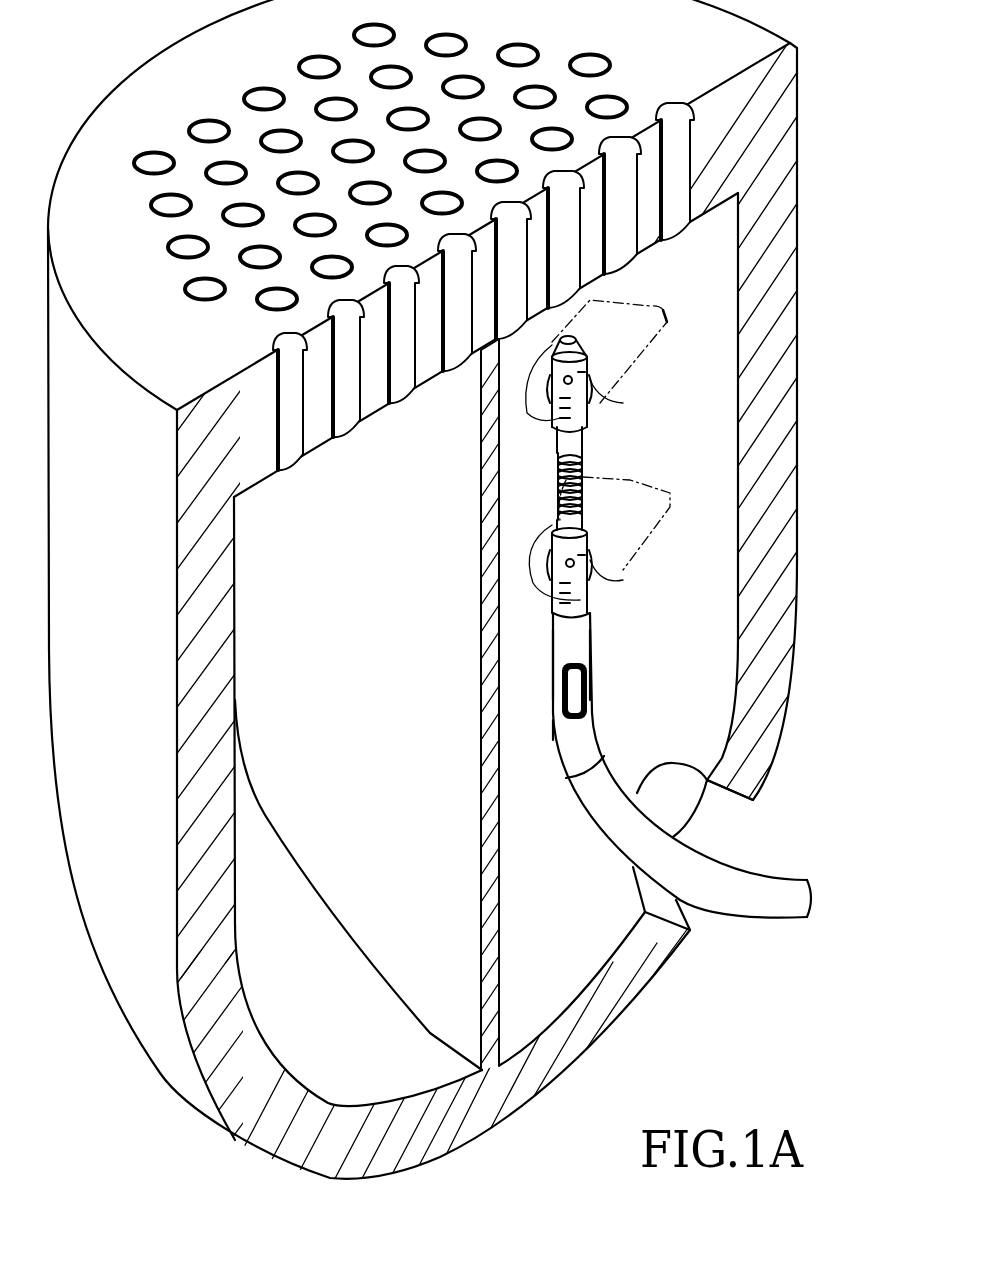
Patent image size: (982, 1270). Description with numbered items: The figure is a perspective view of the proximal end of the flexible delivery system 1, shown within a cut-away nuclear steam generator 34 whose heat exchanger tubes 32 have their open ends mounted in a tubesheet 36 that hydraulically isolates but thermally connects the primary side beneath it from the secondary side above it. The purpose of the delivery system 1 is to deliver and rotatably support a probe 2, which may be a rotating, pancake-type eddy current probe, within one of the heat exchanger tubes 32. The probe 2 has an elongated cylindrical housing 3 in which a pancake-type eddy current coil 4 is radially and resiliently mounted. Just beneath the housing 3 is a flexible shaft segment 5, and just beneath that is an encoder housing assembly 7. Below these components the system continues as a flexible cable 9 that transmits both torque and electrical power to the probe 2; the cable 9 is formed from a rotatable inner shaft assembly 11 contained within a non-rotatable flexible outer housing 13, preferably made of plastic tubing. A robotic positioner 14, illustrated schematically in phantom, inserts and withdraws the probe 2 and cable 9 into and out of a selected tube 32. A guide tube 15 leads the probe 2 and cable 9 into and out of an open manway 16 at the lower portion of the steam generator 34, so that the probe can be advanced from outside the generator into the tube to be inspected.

The flexible delivery system 1 is at (625, 640).
The probe 2 is at (540, 408).
The cylindrical housing 3 is at (552, 418).
The pancake-type eddy current coil 4 is at (575, 383).
The flexible shaft segment 5 is at (557, 497).
The encoder housing assembly 7 is at (580, 593).
The flexible cable 9 is at (548, 729).
The inner shaft assembly 11 is at (587, 697).
The flexible outer housing 13 is at (573, 750).
The robotic positioner 14 is at (640, 473).
The guide tube 15 is at (481, 493).
The manway 16 is at (675, 762).
The heat exchanger tube 32 is at (672, 205).
The nuclear steam generator 34 is at (170, 72).
The tubesheet 36 is at (245, 447).